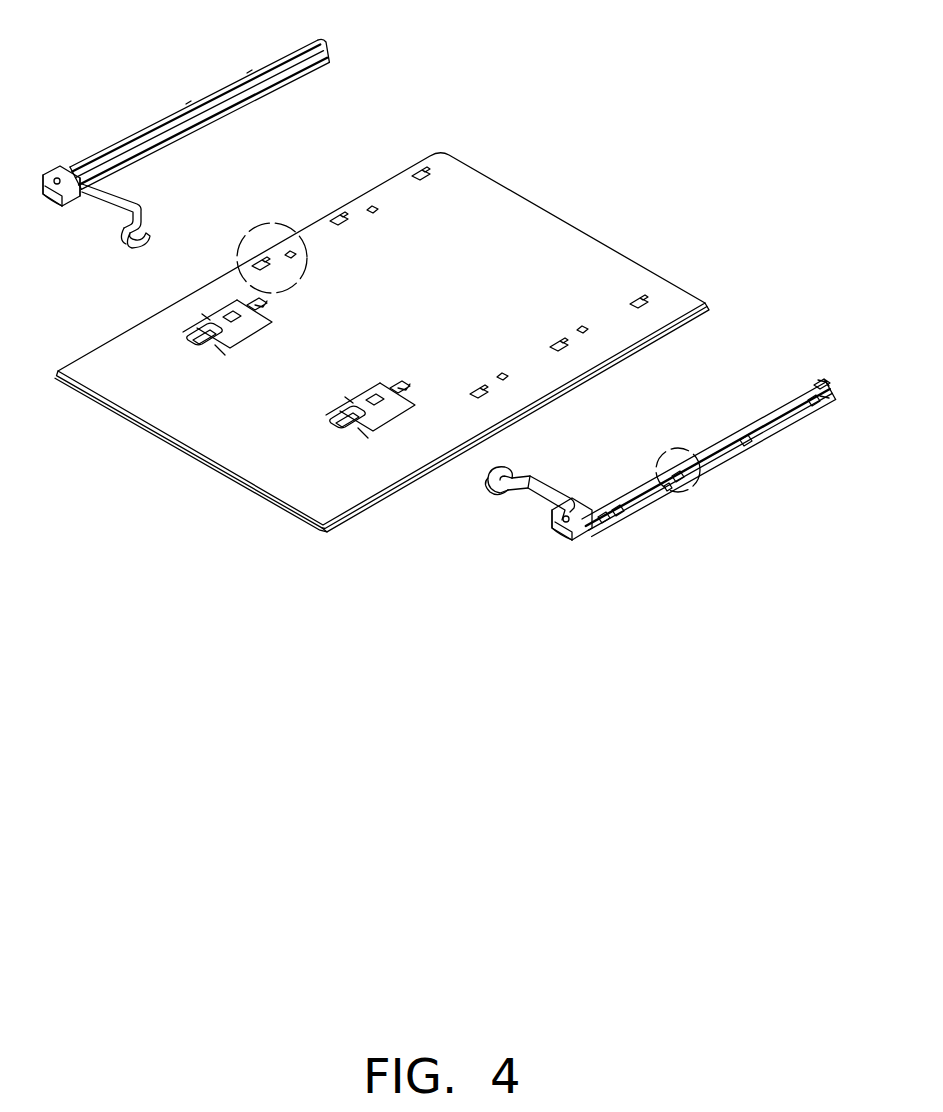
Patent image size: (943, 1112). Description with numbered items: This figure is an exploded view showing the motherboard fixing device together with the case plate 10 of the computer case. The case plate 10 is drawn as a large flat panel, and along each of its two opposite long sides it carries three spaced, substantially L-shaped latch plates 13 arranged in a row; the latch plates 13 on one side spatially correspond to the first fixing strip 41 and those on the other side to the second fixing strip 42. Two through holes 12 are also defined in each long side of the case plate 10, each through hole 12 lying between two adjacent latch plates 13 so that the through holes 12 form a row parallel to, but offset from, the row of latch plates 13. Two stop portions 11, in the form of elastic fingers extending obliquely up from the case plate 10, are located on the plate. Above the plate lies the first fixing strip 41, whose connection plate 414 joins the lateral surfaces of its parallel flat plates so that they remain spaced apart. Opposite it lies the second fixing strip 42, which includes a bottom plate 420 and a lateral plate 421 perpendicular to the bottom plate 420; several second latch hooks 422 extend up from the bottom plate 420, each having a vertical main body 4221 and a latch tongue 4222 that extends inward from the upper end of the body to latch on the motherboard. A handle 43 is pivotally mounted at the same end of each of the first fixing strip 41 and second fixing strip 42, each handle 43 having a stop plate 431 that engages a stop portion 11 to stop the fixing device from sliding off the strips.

The case plate 10 is at (520, 218).
The stop portion 11 is at (213, 322).
The through hole 12 is at (293, 250).
The latch plate 13 is at (257, 259).
The first fixing strip 41 is at (186, 133).
The connection plate 414 is at (213, 92).
The second fixing strip 42 is at (697, 440).
The bottom plate 420 is at (767, 413).
The lateral plate 421 is at (820, 380).
The second latch hook 422 is at (709, 488).
The vertical main body 4221 is at (690, 480).
The latch tongue 4222 is at (649, 517).
The handle 43 is at (493, 498).
The stop plate 431 is at (547, 498).